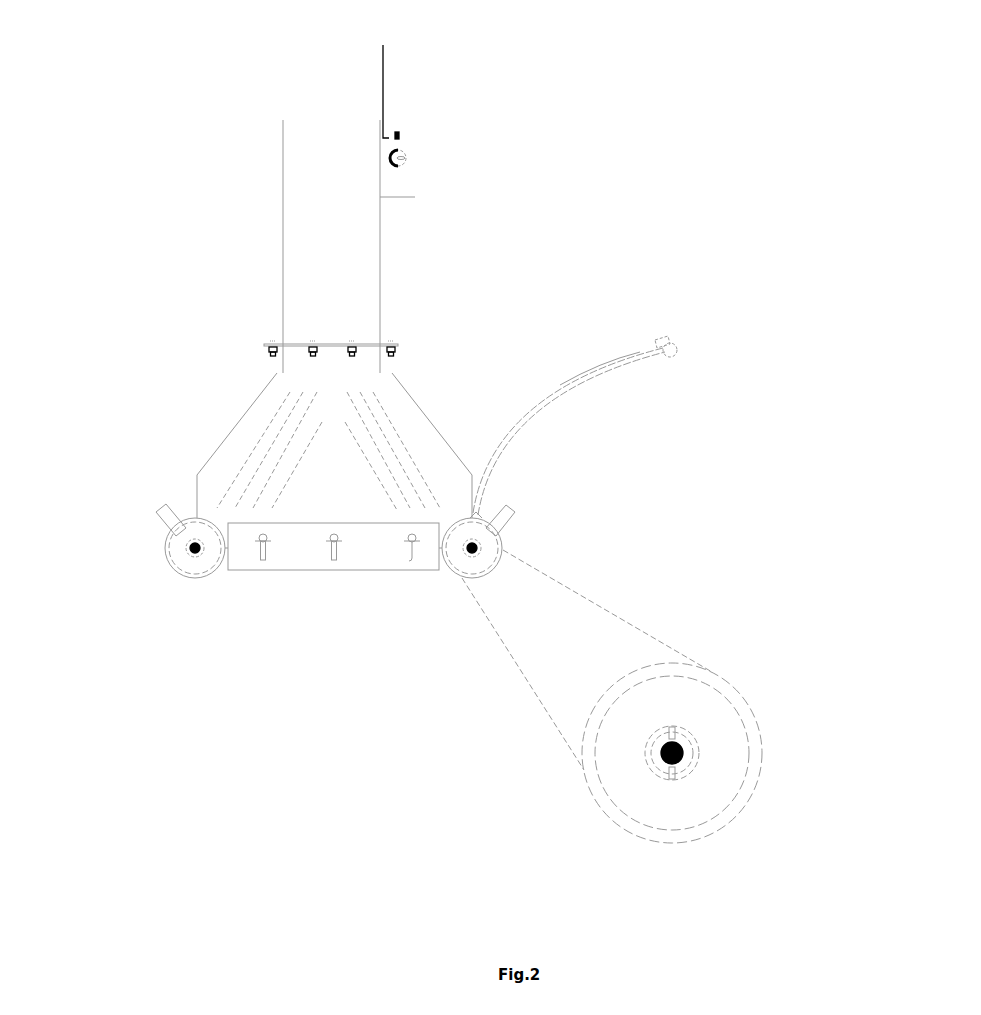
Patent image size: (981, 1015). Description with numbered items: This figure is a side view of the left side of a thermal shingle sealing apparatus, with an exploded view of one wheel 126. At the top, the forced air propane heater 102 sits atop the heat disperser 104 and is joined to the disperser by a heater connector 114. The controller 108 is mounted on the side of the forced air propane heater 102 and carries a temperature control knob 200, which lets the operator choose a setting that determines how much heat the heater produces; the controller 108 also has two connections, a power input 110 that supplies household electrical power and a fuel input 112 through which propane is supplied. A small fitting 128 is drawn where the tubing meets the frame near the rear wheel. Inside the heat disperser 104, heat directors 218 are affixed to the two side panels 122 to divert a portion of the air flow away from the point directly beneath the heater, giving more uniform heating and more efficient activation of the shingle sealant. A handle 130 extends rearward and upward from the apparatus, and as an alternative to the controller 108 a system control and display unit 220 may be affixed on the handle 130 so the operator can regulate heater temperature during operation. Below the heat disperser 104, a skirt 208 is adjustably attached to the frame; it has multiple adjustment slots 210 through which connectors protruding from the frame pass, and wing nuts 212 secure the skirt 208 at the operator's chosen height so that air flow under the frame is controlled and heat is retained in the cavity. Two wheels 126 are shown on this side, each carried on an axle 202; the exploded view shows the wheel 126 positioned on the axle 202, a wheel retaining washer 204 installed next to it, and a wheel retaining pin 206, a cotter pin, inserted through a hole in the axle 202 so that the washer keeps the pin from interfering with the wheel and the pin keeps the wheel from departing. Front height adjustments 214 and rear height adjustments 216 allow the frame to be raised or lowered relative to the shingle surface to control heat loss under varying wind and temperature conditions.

The forced air propane heater 102 is at (330, 232).
The heat disperser 104 is at (203, 465).
The controller 108 is at (395, 178).
The power input 110 is at (380, 74).
The fuel input 112 is at (398, 133).
The heater connector 114 is at (333, 359).
The side panels 122 is at (445, 450).
The wheel 126 is at (188, 573).
The hose connector 128 is at (477, 517).
The handle 130 is at (602, 368).
The temperature control knob 200 is at (407, 155).
The axle 202 is at (683, 753).
The wheel retaining washer 204 is at (683, 768).
The wheel retaining pin 206 is at (672, 728).
The skirt 208 is at (373, 548).
The adjustment slots 210 is at (336, 545).
The wing nuts 212 is at (265, 541).
The front height adjustments 214 is at (158, 518).
The rear height adjustments 216 is at (500, 520).
The heat directors 218 is at (397, 413).
The system control and display unit 220 is at (676, 336).